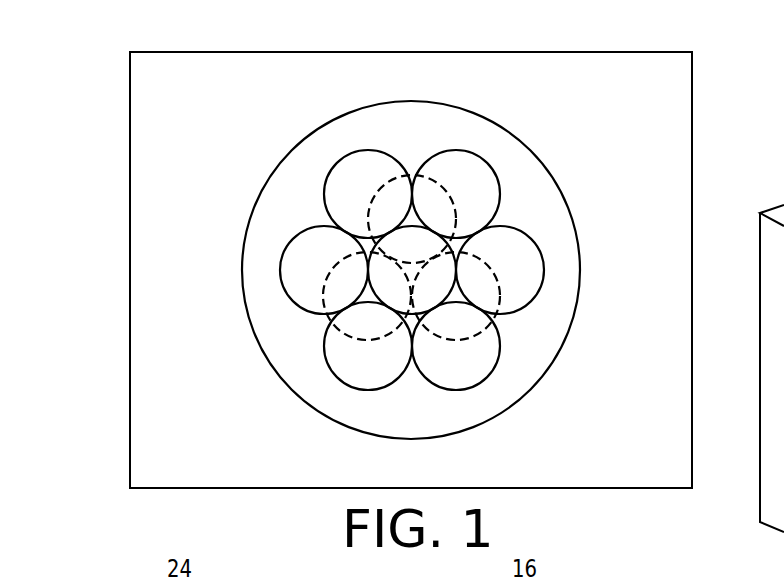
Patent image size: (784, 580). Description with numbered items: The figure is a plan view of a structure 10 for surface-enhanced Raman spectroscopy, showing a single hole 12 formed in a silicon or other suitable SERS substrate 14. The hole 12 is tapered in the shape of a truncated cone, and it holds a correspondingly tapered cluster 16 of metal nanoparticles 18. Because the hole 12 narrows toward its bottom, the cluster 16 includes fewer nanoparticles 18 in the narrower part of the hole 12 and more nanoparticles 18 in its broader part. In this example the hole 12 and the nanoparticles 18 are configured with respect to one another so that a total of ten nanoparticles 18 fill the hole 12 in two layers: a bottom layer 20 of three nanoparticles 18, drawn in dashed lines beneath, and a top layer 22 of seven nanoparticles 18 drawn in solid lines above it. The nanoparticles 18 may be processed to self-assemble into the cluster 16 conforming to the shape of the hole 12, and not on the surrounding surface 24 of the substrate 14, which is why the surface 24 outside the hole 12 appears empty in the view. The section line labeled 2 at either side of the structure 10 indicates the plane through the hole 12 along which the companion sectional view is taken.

The structure 10 is at (730, 93).
The hole 12 is at (533, 187).
The SERS substrate 14 is at (673, 163).
The cluster 16 is at (556, 270).
The metal nanoparticles 18 is at (452, 378).
The bottom layer 20 is at (492, 316).
The top layer 22 is at (299, 297).
The surface 24 is at (614, 390).
The section line 2- 2 is at (130, 270).